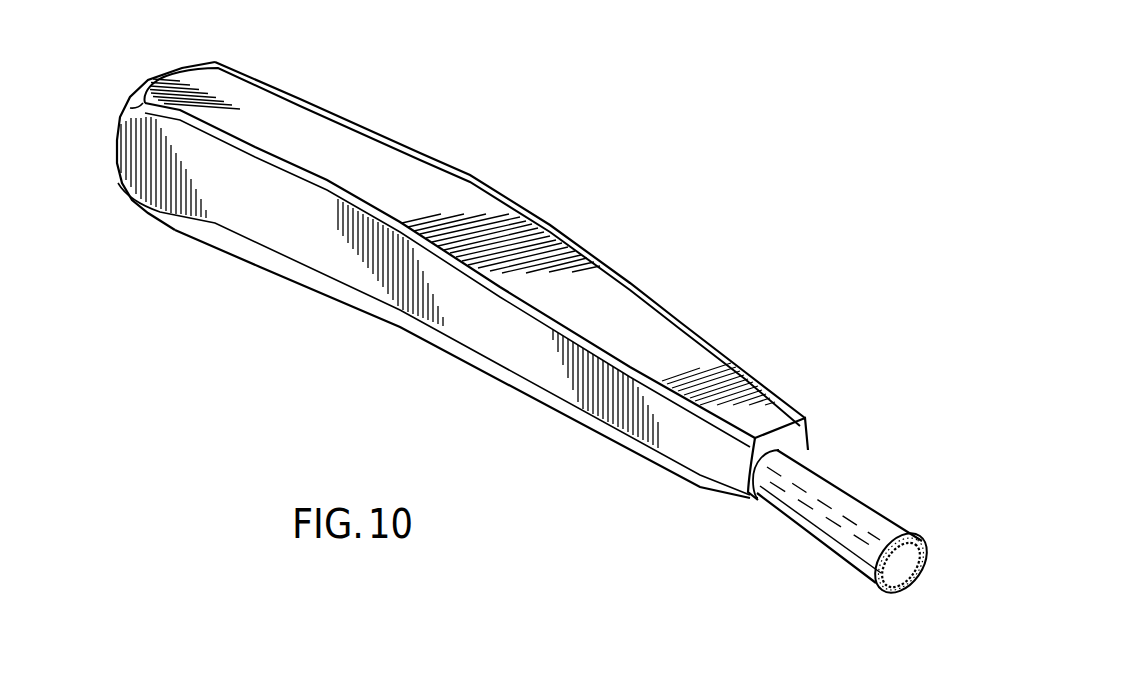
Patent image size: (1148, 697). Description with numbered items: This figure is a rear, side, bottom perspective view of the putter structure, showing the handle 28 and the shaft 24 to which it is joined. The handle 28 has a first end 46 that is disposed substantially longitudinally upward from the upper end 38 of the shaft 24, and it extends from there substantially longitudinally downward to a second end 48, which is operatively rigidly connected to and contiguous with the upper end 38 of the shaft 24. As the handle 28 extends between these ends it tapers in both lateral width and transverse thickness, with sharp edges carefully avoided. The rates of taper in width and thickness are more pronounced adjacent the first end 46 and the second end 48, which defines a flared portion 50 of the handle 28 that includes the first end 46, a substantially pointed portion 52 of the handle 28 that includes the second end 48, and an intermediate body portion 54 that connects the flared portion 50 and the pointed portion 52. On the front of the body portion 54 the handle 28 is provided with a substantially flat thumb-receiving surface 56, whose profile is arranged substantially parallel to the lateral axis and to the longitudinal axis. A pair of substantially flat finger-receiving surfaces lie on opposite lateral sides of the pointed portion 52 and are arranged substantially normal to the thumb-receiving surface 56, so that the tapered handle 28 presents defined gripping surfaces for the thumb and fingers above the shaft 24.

The shaft 24 is at (838, 533).
The handle 28 is at (370, 328).
The upper end of the shaft 38 is at (830, 458).
The first end 46 is at (127, 208).
The second end 48 is at (693, 490).
The flared portion 50 is at (263, 57).
The pointed portion 52 is at (787, 376).
The intermediate body portion 54 is at (474, 159).
The thumb-receiving surface 56 is at (686, 365).